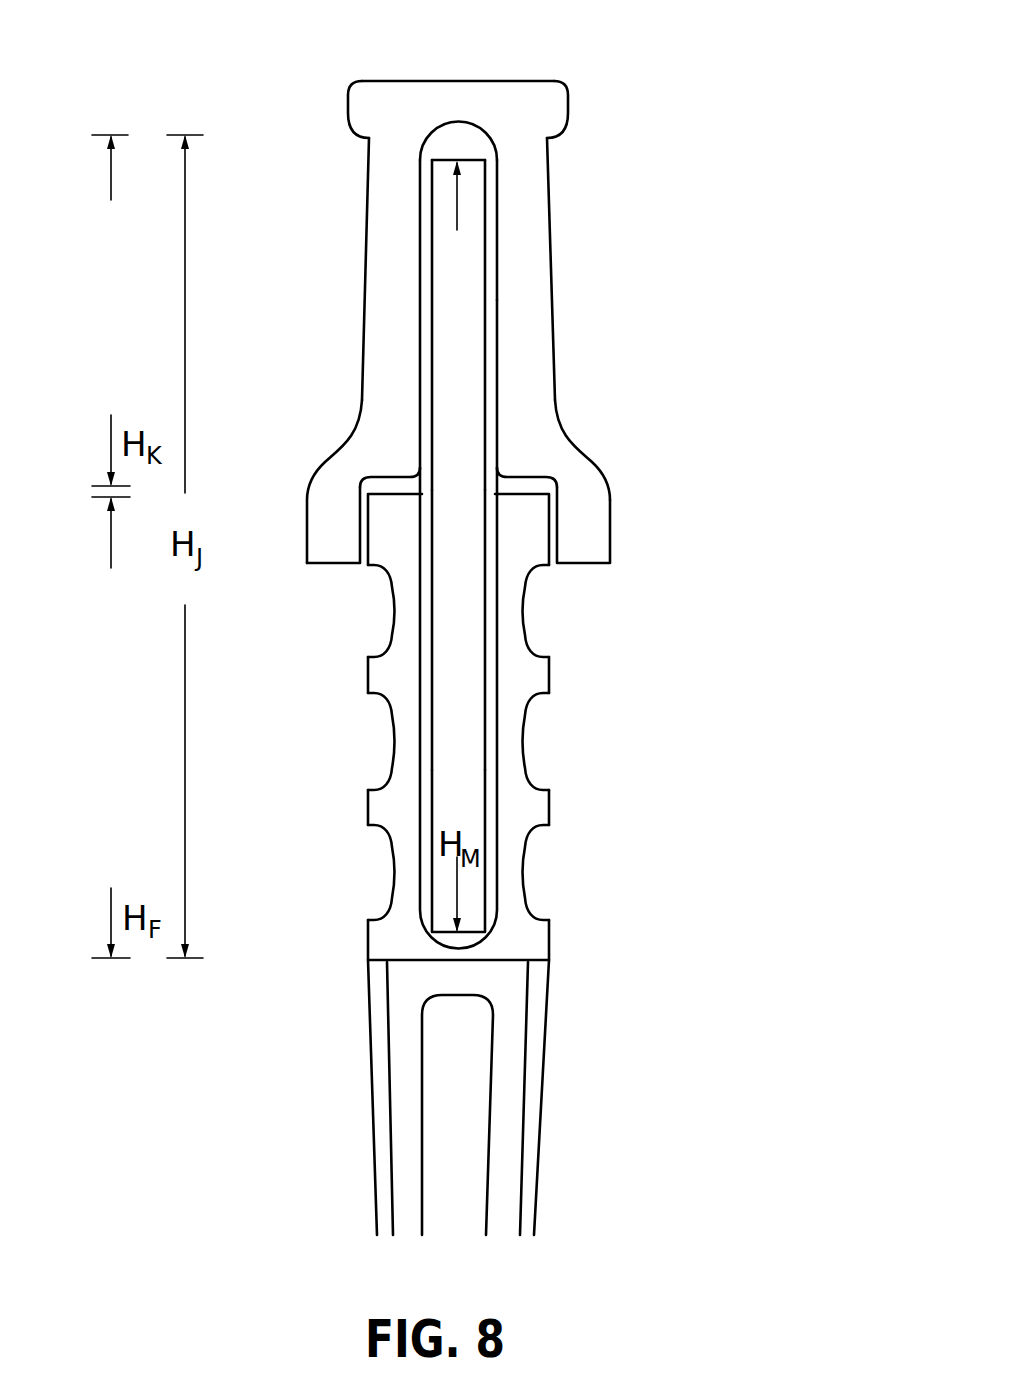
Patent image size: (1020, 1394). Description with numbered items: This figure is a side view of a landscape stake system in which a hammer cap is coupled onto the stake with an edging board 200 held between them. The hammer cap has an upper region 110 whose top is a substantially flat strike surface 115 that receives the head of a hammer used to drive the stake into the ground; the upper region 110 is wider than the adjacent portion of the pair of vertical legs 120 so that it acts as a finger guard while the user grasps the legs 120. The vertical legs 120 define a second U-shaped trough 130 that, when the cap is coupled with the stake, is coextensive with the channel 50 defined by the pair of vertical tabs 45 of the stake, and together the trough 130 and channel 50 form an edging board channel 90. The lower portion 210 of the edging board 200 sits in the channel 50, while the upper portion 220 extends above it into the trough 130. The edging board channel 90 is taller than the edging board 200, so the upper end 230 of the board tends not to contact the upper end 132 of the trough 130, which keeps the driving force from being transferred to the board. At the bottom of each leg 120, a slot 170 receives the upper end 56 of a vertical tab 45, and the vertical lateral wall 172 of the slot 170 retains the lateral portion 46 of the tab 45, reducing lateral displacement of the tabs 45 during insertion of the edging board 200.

The strike surface 115 is at (510, 80).
The upper region of the hammer cap 110 is at (568, 93).
The upper end of the trough 132 is at (452, 127).
The upper end of the edging board 230 is at (485, 154).
The trough 130 is at (488, 237).
The vertical legs 120 is at (553, 292).
The upper portion of the edging board 220 is at (470, 343).
The edging board channel 90 is at (490, 407).
The upper end of the vertical tab 56 is at (513, 490).
The lateral wall 172 is at (558, 498).
The lateral portion of the vertical tab 46 is at (548, 527).
The edging board 200 is at (465, 598).
The vertical tabs 45 is at (540, 673).
The lower portion of the edging board 210 is at (465, 780).
The channel 50 is at (487, 847).
The slots 170 is at (382, 493).